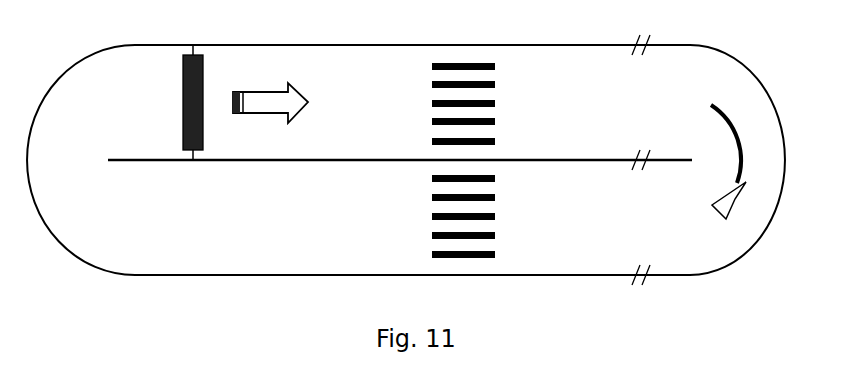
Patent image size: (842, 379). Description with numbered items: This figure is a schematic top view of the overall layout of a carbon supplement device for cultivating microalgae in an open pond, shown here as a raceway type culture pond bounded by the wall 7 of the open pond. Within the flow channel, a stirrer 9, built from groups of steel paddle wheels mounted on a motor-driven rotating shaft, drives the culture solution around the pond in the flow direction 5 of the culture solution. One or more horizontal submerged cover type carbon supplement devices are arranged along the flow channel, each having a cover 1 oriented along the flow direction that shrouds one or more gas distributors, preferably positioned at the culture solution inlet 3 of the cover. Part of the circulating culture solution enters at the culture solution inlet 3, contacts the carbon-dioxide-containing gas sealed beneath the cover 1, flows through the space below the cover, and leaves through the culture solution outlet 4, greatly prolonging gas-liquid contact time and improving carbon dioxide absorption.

The cover 1 is at (460, 61).
The culture solution inlet 3 is at (432, 63).
The culture solution outlet 4 is at (498, 62).
The flow direction of culture solution 5 is at (263, 99).
The wall of an open pond 7 is at (175, 271).
The stirrer 9 is at (180, 72).